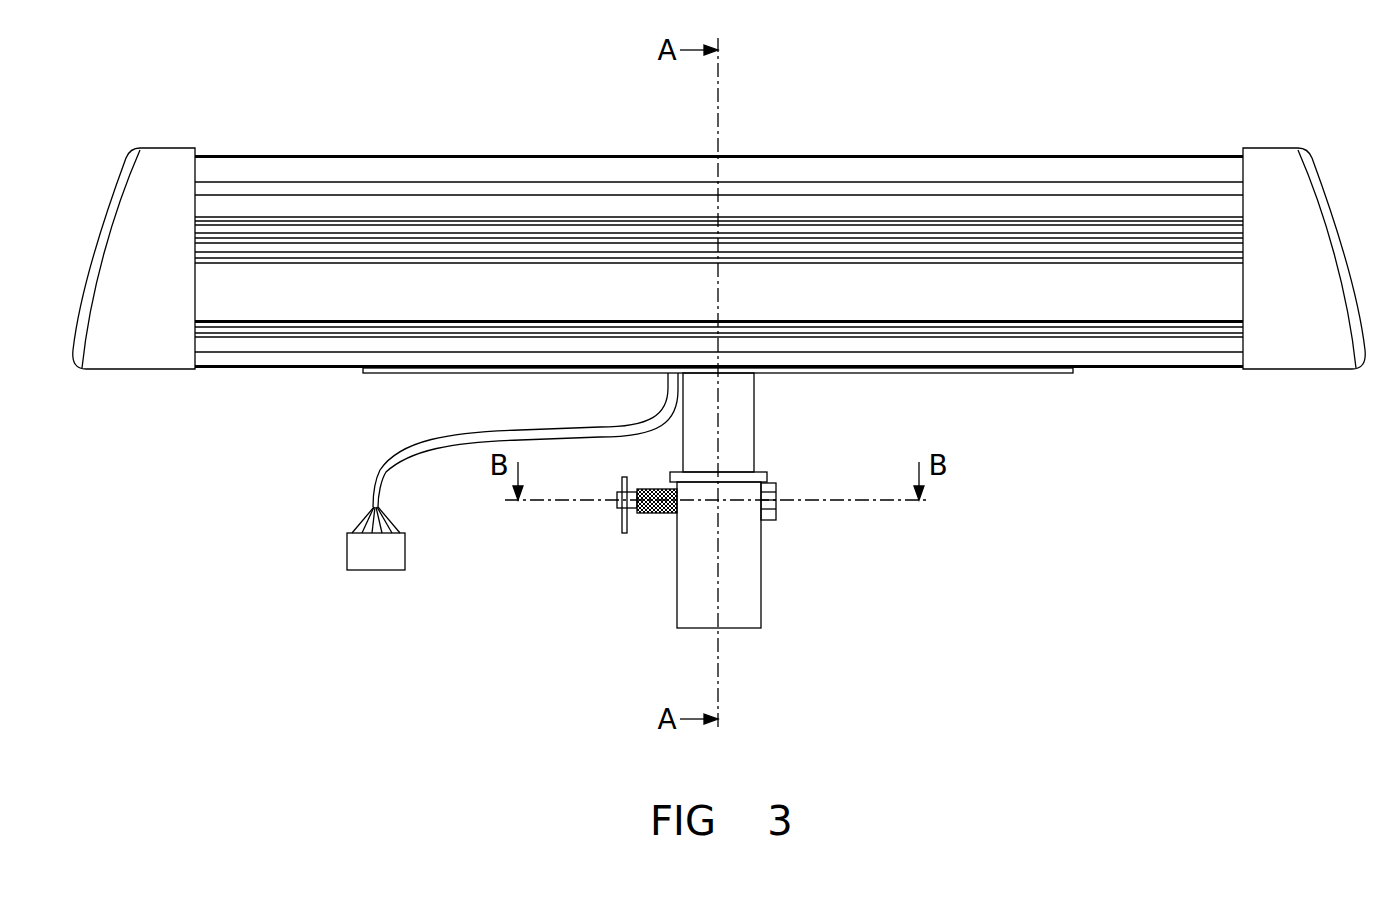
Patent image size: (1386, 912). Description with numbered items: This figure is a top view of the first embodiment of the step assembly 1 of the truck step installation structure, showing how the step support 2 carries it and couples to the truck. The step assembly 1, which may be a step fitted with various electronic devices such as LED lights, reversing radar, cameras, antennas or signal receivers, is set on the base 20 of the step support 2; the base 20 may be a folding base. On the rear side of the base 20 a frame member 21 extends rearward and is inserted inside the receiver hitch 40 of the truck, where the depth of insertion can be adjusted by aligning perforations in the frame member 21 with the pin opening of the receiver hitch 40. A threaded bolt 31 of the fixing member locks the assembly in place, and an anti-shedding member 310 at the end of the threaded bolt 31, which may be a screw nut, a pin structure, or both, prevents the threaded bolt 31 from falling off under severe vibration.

The step assembly 1 is at (719, 201).
The step support 2 is at (773, 429).
The base 20 is at (987, 373).
The frame member 21 is at (735, 430).
The threaded bolt 31 is at (773, 518).
The anti-shedding member 310 is at (622, 523).
The receiver hitch 40 is at (742, 616).